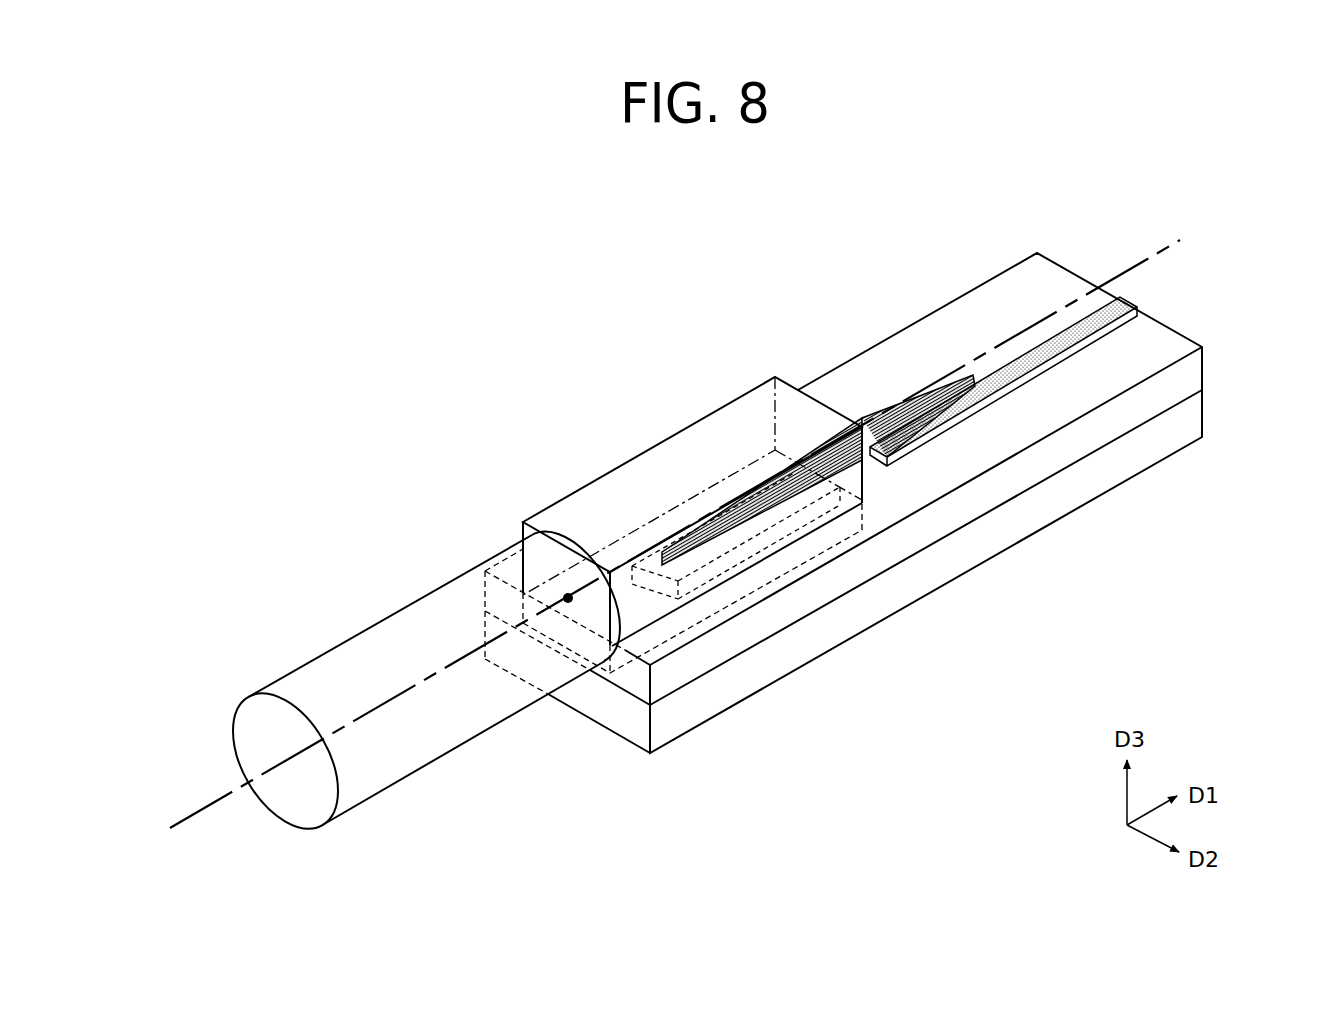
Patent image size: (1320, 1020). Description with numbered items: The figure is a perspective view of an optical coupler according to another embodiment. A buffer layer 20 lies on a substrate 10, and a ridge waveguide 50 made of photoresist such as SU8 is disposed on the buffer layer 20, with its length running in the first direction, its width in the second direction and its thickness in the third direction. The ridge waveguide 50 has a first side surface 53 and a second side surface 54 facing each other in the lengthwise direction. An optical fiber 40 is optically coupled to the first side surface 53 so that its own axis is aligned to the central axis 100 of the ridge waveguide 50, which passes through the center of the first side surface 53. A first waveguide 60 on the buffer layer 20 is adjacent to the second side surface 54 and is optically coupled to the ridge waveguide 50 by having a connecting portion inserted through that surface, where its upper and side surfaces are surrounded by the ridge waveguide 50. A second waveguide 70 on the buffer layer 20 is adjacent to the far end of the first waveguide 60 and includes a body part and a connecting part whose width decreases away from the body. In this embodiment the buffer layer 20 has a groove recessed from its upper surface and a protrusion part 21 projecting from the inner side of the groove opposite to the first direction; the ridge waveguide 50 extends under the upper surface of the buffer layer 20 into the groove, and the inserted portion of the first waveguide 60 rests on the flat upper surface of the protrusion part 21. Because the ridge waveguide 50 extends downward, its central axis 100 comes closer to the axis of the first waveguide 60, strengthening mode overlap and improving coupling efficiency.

The substrate 10 is at (1195, 413).
The buffer layer 20 is at (1195, 375).
The protrusion part 21 is at (658, 590).
The optical fiber 40 is at (383, 640).
The ridge waveguide 50 is at (745, 393).
The first side surface 53 is at (538, 567).
The second side surface 54 is at (798, 425).
The first waveguide 60 is at (913, 400).
The second waveguide 70 is at (1030, 357).
The central axis 100 is at (188, 808).